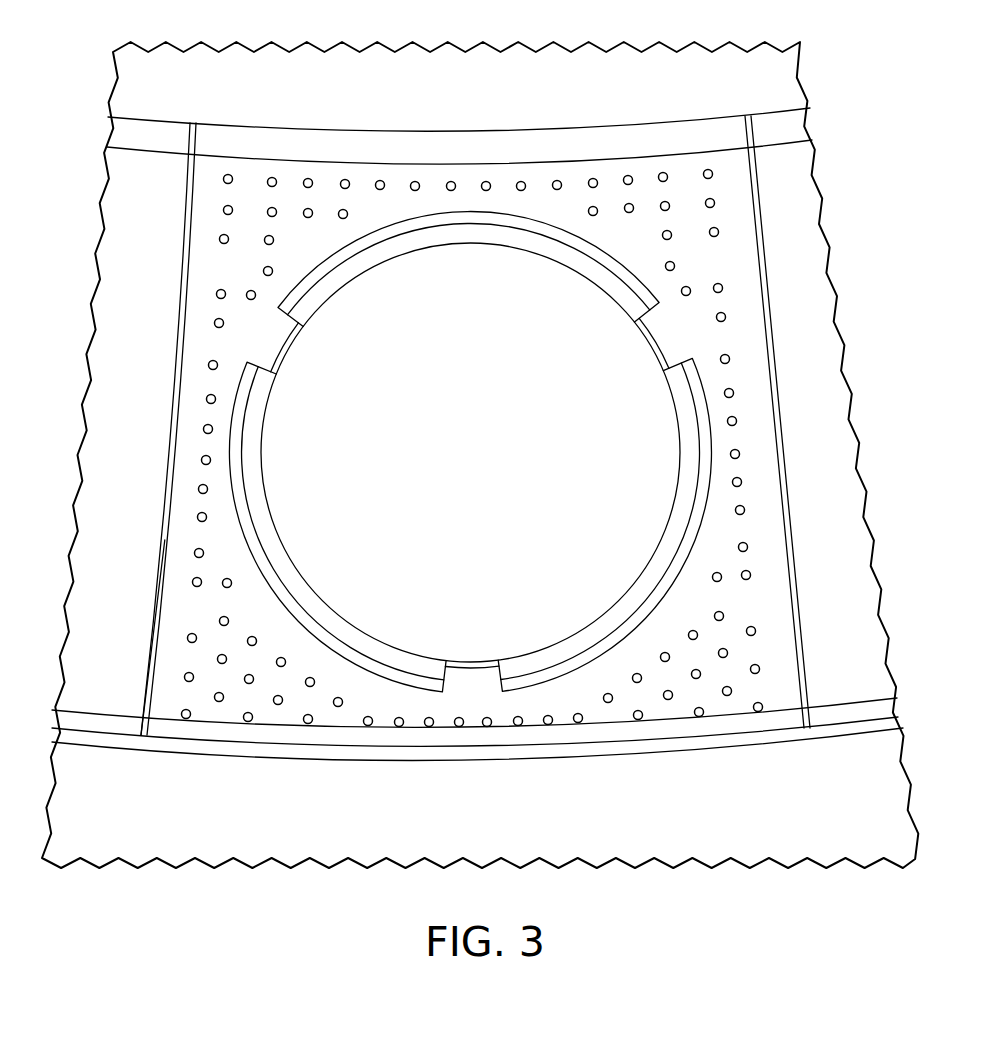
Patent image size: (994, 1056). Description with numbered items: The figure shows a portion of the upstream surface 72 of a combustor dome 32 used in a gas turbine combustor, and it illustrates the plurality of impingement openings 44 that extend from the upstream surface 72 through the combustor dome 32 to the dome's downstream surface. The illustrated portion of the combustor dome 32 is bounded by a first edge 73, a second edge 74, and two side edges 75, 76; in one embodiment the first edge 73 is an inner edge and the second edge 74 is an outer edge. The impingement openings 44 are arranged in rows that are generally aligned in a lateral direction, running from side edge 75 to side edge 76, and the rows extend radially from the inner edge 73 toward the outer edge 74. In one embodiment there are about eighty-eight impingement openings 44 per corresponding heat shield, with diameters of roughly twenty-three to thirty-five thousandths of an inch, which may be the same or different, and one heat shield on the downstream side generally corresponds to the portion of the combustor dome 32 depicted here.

The combustor dome 32 is at (480, 455).
The impingement openings 44 is at (203, 429).
The upstream surface 72 is at (163, 647).
The first edge 73 is at (343, 128).
The second edge 74 is at (338, 761).
The side edge 75 is at (178, 246).
The side edge 76 is at (770, 316).